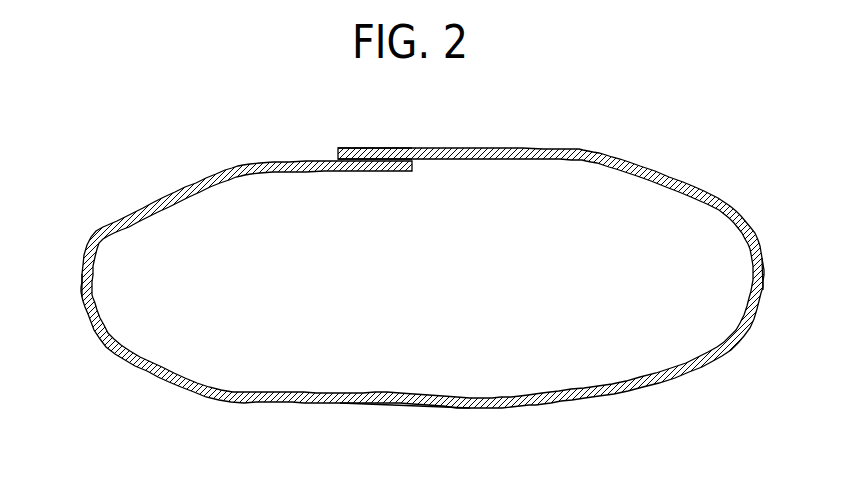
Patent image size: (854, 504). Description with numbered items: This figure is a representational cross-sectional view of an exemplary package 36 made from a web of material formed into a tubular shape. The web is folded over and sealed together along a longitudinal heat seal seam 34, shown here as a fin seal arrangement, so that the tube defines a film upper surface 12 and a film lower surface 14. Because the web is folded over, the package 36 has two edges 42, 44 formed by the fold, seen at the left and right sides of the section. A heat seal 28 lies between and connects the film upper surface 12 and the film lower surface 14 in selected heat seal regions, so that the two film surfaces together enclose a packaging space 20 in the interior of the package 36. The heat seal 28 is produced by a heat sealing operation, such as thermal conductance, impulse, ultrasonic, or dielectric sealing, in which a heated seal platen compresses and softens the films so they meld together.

The film upper surface 12 is at (525, 147).
The film lower surface 14 is at (402, 404).
The packaging space 20 is at (430, 290).
The heat seal 28 is at (365, 172).
The longitudinal heat seal seam 34 is at (367, 147).
The package 36 is at (216, 130).
The edge 42 is at (762, 275).
The edge 44 is at (81, 281).